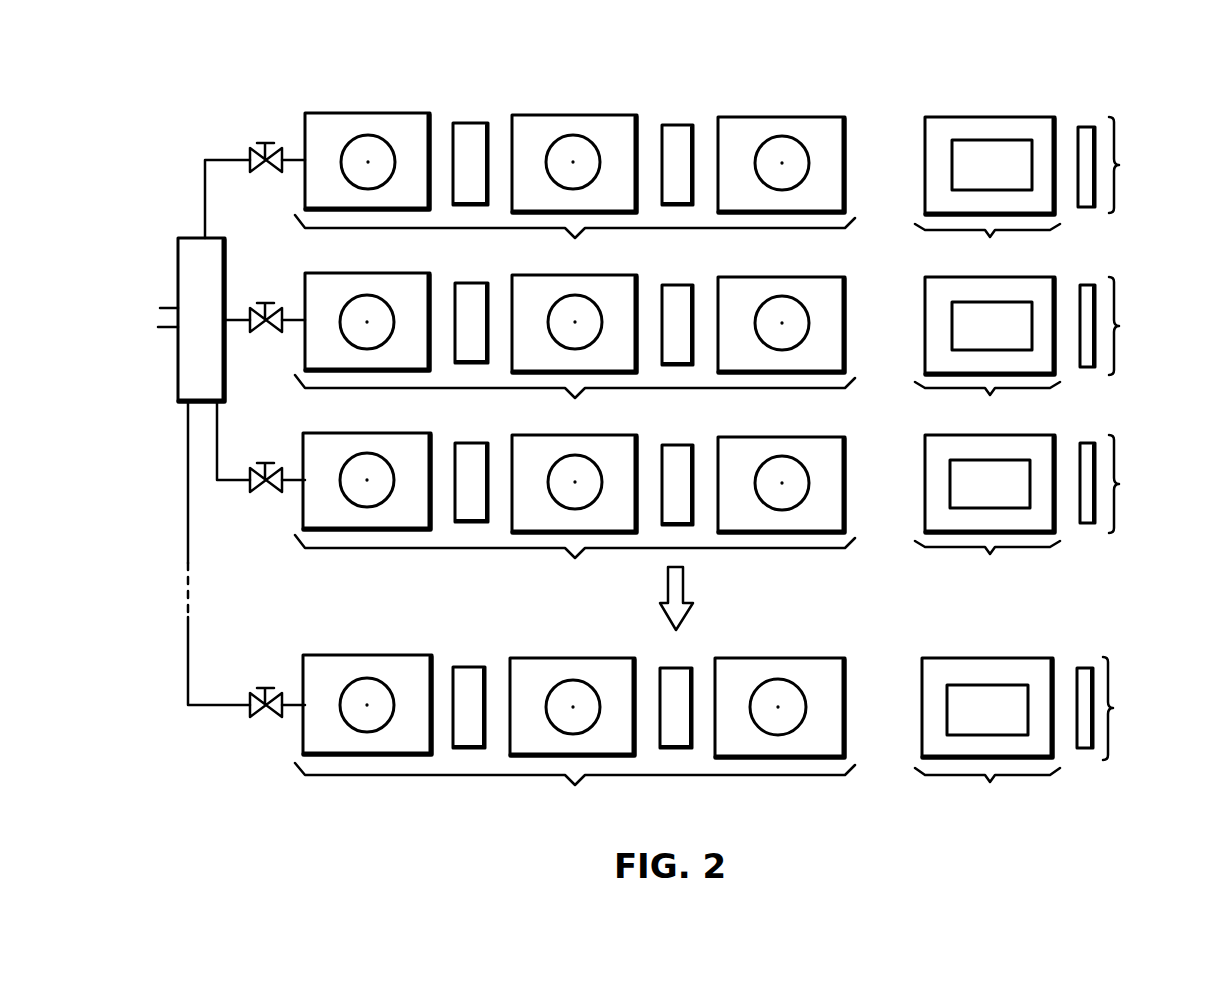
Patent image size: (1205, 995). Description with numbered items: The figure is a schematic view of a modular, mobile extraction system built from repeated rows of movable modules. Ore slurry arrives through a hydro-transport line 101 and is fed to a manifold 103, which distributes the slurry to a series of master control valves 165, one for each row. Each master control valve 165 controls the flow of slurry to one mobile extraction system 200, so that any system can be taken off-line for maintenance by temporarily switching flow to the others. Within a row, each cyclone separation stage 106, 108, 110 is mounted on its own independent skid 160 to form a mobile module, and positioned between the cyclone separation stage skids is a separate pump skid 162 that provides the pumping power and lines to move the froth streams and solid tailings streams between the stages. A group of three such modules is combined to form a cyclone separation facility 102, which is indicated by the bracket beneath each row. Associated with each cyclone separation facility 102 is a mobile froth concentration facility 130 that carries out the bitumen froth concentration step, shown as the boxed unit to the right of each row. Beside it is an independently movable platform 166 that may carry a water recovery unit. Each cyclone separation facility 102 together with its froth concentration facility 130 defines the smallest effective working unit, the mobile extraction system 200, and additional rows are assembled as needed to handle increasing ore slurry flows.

The hydro-transport line 101 is at (168, 325).
The cyclone separation facility 102 is at (564, 172).
The manifold 103 is at (190, 260).
The cyclone separation stage 106 is at (371, 150).
The cyclone separation stage 108 is at (582, 150).
The cyclone separation stage 110 is at (792, 151).
The froth concentration facility 130 is at (987, 191).
The skid 160 is at (323, 128).
The pump skid 162 is at (468, 138).
The master control valve 165 is at (253, 150).
The independently movable platform 166 is at (1082, 124).
The mobile extraction system 200 is at (1143, 165).